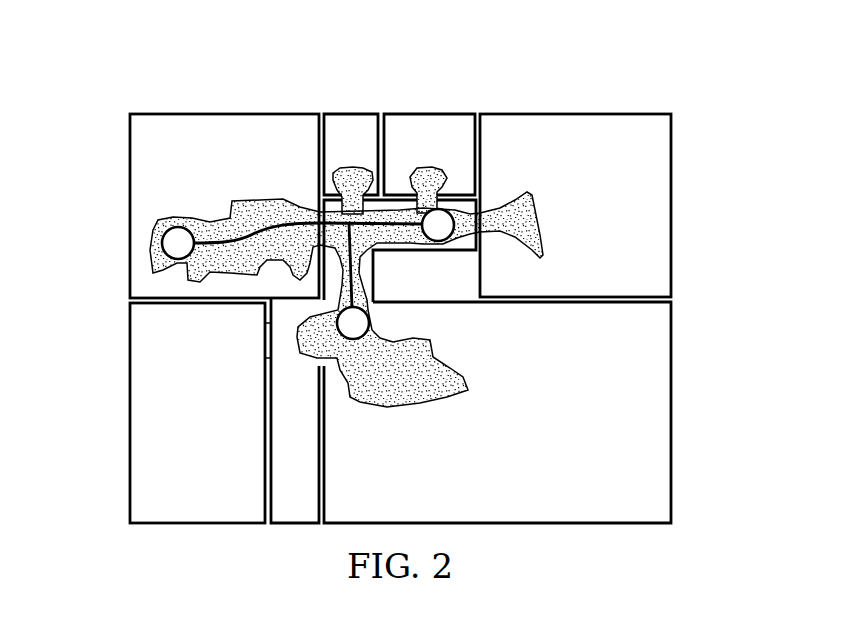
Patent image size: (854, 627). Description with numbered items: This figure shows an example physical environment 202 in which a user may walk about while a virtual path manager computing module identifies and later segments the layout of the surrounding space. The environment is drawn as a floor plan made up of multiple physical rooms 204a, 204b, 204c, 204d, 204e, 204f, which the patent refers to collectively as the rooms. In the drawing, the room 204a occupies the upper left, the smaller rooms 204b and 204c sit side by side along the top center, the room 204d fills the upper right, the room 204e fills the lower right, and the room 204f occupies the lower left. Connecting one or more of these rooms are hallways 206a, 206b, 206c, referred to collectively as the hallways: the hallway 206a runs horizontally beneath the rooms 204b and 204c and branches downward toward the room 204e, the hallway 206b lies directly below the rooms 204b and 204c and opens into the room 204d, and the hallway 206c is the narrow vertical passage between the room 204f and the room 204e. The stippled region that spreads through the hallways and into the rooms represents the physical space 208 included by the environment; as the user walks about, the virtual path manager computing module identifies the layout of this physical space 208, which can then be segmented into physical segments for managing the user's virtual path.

The physical environment 202 is at (195, 71).
The room 204a is at (138, 202).
The room 204b is at (351, 122).
The room 204c is at (432, 123).
The room 204d is at (670, 204).
The room 204e is at (662, 414).
The room 204f is at (140, 413).
The hallway 206a is at (370, 265).
The hallway 206b is at (465, 200).
The hallway 206c is at (293, 513).
The physical space 208 is at (260, 200).